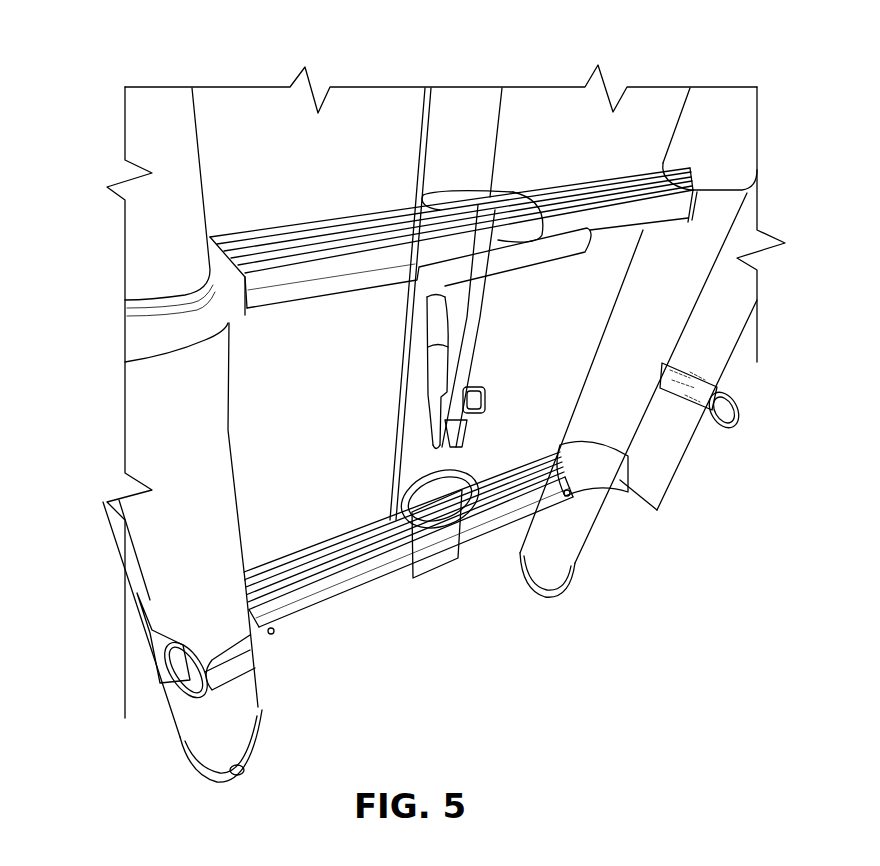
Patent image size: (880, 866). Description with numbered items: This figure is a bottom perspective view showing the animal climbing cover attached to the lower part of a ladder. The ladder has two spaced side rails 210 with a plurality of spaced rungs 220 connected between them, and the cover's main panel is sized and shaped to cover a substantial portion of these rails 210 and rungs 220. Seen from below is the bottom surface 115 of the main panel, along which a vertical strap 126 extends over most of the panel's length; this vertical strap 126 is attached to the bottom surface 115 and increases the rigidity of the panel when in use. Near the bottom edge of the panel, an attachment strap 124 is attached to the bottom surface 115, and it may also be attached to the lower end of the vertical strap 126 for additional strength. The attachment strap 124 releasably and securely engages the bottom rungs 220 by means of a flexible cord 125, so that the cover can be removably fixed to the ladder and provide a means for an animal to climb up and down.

The bottom surface 115 is at (272, 422).
The vertical strap 126 is at (473, 97).
The side rails 210 is at (150, 548).
The rungs 220 is at (645, 222).
The flexible cord 125 is at (477, 313).
The attachment strap 124 is at (435, 552).